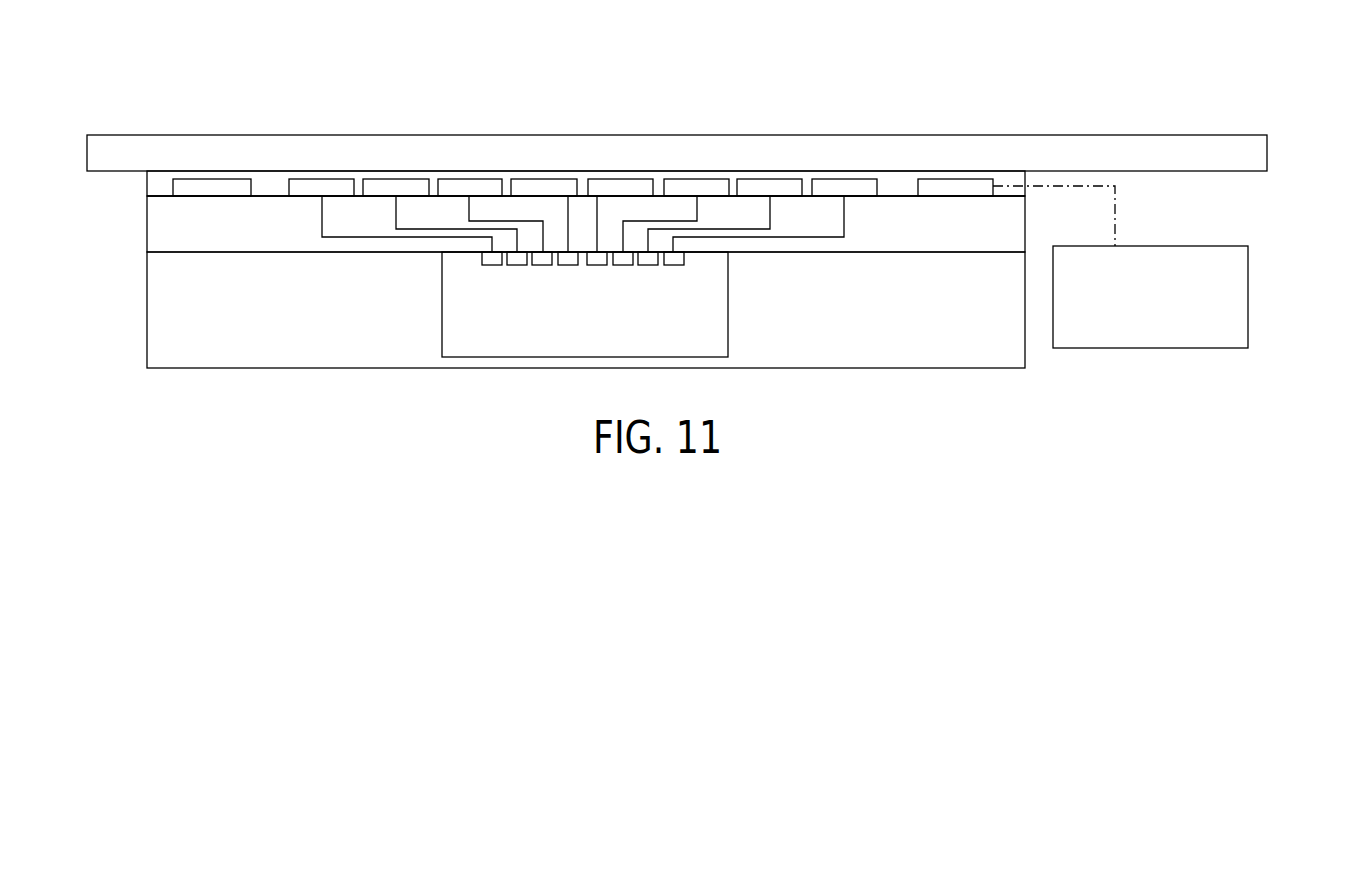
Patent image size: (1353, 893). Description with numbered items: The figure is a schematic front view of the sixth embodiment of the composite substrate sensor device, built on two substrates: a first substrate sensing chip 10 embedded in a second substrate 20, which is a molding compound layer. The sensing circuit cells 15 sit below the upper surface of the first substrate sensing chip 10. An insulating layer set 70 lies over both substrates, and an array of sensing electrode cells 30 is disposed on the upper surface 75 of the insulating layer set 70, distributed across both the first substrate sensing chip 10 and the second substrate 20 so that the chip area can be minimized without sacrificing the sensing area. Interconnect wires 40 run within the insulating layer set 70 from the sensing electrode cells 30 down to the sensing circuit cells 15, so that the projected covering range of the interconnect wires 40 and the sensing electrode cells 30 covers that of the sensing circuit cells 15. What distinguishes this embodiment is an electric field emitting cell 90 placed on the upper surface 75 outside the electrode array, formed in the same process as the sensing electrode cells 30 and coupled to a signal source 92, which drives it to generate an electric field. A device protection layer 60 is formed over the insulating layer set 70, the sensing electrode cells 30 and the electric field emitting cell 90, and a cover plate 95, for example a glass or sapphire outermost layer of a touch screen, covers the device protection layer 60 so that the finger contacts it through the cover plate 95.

The first substrate sensing chip 10 is at (720, 318).
The sensing circuit cells 15 is at (492, 262).
The second substrate 20 is at (152, 312).
The sensing electrode cells 30 is at (323, 187).
The interconnect wires 40 is at (372, 238).
The device protection layer 60 is at (159, 177).
The insulating layer set 70 is at (152, 226).
The upper surface 75 is at (275, 197).
The electric field emitting cell 90 is at (225, 187).
The signal source 92 is at (1237, 300).
The cover plate 95 is at (429, 152).